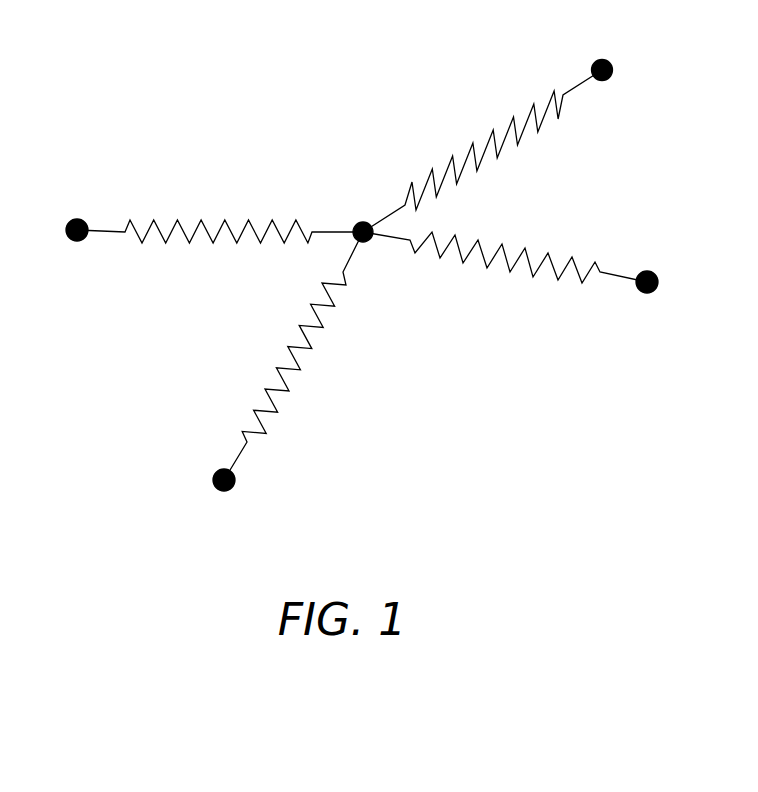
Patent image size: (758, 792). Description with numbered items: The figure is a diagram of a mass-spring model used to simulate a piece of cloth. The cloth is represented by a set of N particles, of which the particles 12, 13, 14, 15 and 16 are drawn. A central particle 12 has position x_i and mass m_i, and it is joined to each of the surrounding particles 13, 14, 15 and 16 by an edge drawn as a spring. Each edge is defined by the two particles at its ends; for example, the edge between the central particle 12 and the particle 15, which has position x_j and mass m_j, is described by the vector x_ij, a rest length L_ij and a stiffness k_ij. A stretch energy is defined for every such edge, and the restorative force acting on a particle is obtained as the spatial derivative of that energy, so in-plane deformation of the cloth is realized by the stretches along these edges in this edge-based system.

The particle 12 is at (361, 222).
The particle 13 is at (603, 58).
The particle 14 is at (72, 217).
The particle 15 is at (221, 469).
The particle 16 is at (651, 270).